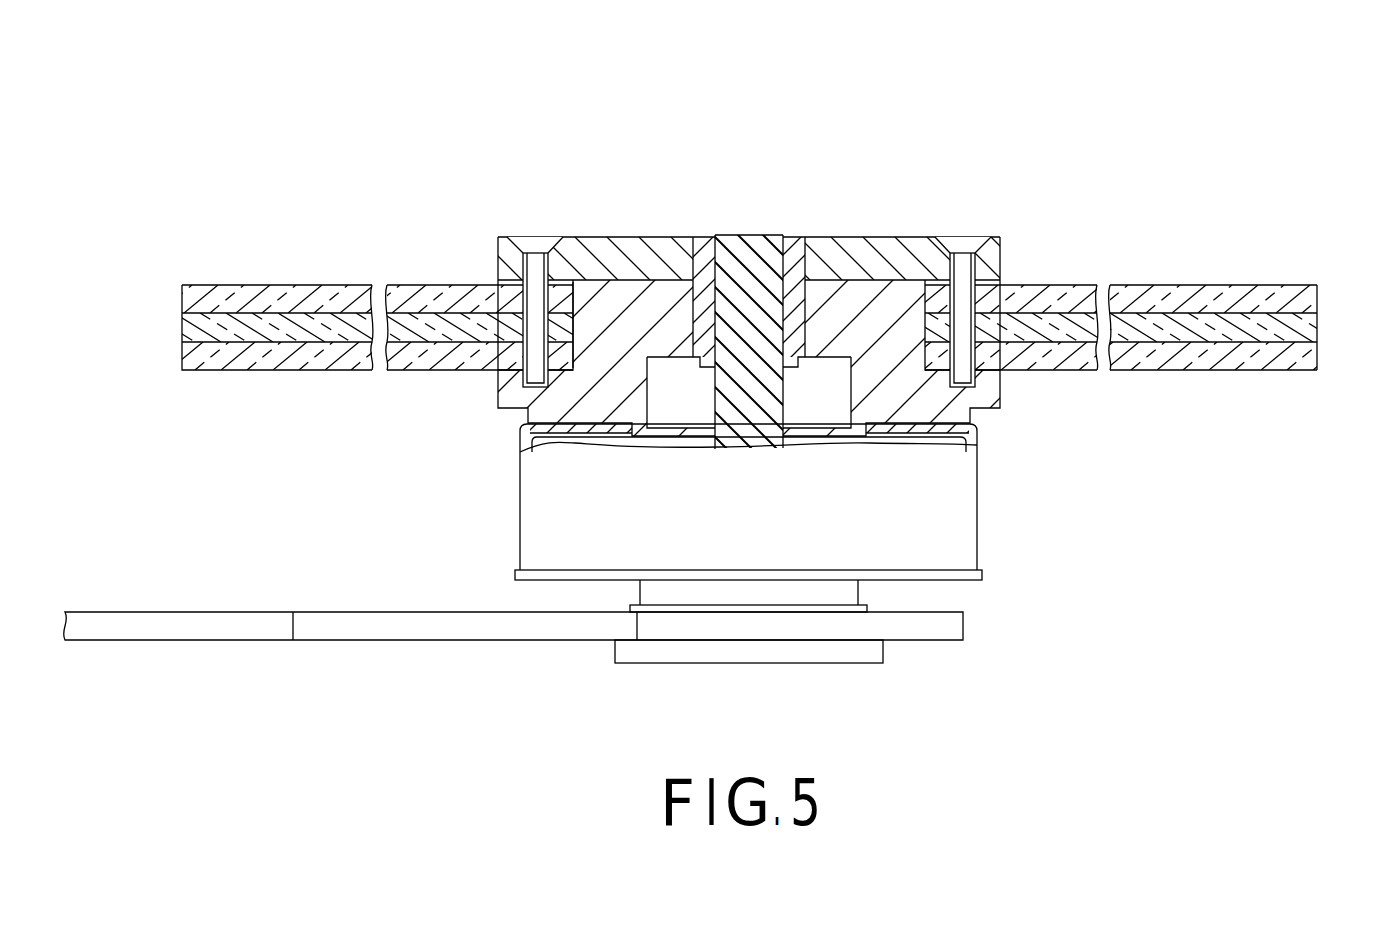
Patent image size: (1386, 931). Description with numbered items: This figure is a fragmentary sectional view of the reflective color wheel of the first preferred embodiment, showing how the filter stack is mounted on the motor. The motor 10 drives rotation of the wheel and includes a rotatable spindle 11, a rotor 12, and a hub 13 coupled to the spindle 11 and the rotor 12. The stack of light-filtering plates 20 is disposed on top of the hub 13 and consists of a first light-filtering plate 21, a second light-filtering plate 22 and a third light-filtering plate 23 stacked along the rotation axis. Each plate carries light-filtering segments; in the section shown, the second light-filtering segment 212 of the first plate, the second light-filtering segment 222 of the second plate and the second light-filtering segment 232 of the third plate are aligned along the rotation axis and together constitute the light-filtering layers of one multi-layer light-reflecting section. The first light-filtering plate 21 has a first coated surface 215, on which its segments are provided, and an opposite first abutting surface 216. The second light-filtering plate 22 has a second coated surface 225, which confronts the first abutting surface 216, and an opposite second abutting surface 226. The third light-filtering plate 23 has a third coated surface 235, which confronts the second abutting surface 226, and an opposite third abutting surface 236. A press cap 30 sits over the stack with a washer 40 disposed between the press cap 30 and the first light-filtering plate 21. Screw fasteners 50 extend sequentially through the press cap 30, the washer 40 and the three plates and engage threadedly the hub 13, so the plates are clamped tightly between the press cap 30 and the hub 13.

The motor 10 is at (1002, 549).
The spindle 11 is at (748, 423).
The rotor 12 is at (567, 537).
The hub 13 is at (912, 402).
The stack of light-filtering plates 20 is at (741, 321).
The first light-filtering plate 21 is at (774, 248).
The second light-filtering plate 22 is at (784, 350).
The third light-filtering plate 23 is at (707, 387).
The second light-filtering segment 212 is at (273, 284).
The first coated surface 215 is at (1203, 284).
The first abutting surface 216 is at (1220, 313).
The second light-filtering segment 222 is at (243, 312).
The second coated surface 225 is at (1273, 343).
The second abutting surface 226 is at (1222, 328).
The second light-filtering segment 232 is at (228, 340).
The third coated surface 235 is at (1147, 429).
The third abutting surface 236 is at (1057, 371).
The press cap 30 is at (662, 253).
The washer 40 is at (562, 282).
The screw fasteners 50 is at (538, 246).